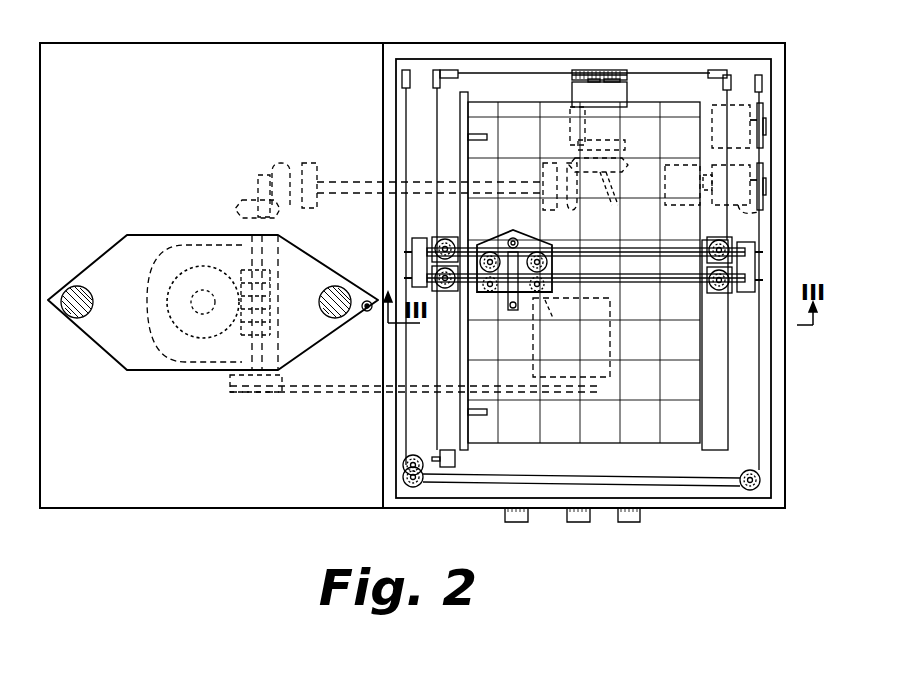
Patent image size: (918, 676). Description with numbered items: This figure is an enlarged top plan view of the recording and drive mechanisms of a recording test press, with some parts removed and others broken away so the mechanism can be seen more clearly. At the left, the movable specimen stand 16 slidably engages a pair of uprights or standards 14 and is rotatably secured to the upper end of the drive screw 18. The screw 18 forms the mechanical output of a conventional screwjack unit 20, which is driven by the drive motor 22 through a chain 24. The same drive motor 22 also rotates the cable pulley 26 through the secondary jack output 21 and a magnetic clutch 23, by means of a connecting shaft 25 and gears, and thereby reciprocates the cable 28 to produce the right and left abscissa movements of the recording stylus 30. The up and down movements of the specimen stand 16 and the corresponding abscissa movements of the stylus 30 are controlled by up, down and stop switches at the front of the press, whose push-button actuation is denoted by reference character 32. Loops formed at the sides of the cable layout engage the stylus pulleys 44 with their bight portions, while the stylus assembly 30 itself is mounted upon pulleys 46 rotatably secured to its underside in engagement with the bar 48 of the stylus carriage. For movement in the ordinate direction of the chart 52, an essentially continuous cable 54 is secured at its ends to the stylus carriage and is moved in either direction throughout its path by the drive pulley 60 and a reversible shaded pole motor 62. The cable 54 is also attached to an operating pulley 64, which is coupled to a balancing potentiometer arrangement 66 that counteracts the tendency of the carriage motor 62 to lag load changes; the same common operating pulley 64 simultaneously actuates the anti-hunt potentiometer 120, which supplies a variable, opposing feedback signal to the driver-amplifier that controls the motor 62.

The uprights or standards 14 is at (77, 318).
The specimen stand 16 is at (160, 235).
The drive screw 18 is at (160, 270).
The screwjack unit 20 is at (170, 345).
The secondary jack output 21 is at (240, 235).
The drive motor 22 is at (610, 333).
The magnetic clutch 23 is at (627, 92).
The chain 24 is at (350, 392).
The connecting shaft 25 is at (512, 177).
The cable pulley 26 is at (592, 70).
The cable 28 is at (533, 73).
The recording stylus 30 is at (513, 310).
The push-button switches 32 is at (633, 522).
The stylus pulleys 44 is at (540, 253).
The pulleys 46 is at (520, 240).
The bar 48 is at (665, 283).
The chart 52 is at (565, 432).
The cable 54 is at (760, 420).
The drive pulley 60 is at (765, 118).
The shaded pole motor 62 is at (737, 110).
The operating pulley 64 is at (765, 170).
The balancing potentiometer arrangement 66 is at (765, 214).
The anti-hunt potentiometer 120 is at (676, 166).